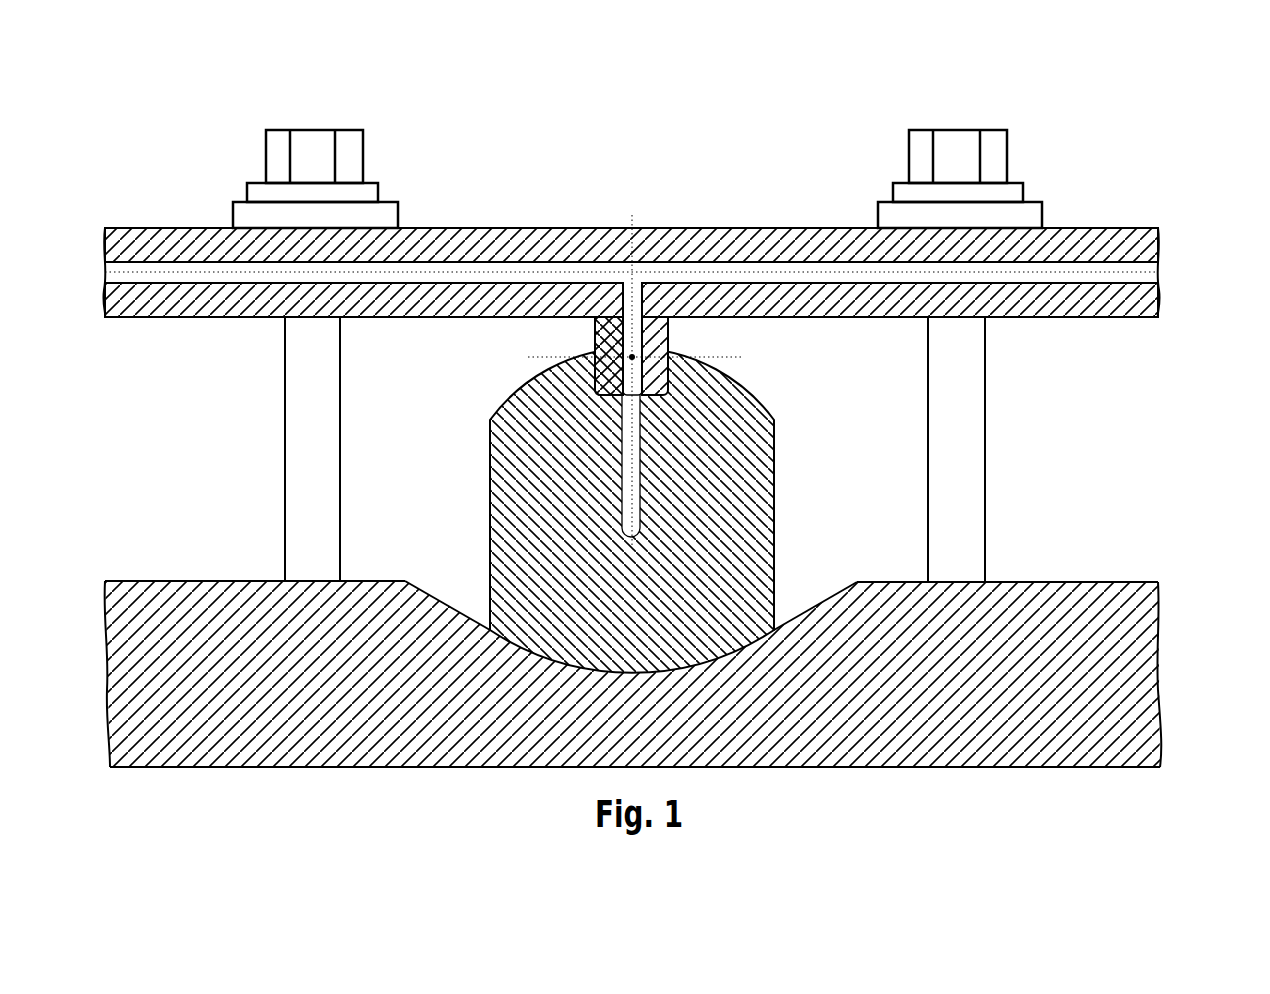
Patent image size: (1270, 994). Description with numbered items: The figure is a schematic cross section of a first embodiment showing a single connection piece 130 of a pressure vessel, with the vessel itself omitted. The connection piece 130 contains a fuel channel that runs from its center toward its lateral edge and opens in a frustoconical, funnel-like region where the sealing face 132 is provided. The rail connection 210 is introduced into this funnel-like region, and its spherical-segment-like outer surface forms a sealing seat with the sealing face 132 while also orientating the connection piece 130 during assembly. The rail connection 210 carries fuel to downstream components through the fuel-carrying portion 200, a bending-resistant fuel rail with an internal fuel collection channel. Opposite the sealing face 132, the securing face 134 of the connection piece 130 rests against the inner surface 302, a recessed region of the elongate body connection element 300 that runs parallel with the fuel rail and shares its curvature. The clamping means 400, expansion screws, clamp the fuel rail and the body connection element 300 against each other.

The connection piece 130 is at (760, 402).
The sealing face 132 is at (597, 333).
The securing face 134 is at (806, 641).
The fuel-carrying portion 200 is at (697, 273).
The rail connection 210 is at (672, 322).
The body connection element 300 is at (1162, 652).
The inner surface 302 is at (433, 598).
The clamping means 400 is at (318, 150).